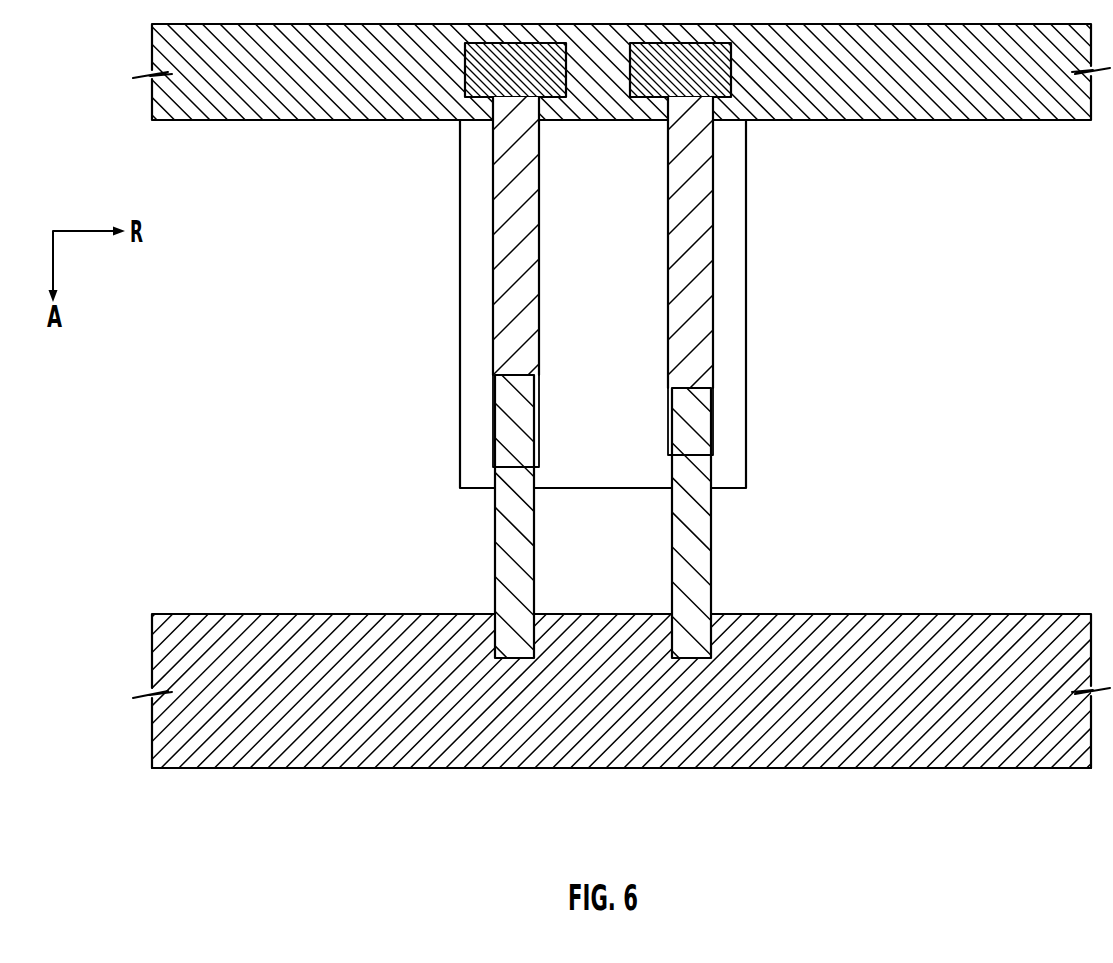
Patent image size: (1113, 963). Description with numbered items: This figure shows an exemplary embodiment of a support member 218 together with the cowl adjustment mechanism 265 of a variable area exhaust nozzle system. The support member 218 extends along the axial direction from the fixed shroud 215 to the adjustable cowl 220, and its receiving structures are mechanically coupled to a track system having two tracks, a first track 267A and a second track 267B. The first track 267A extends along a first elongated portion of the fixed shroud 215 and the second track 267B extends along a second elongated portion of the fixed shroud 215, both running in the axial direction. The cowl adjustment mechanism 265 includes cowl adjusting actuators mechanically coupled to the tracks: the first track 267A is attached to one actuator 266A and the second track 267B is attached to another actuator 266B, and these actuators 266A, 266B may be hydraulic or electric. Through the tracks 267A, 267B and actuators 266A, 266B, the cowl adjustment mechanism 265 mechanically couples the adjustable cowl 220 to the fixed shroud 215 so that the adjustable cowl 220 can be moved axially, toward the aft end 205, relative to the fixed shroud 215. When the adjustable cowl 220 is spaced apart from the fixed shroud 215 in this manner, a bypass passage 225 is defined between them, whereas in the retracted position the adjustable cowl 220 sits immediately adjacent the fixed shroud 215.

The fixed shroud 215 is at (615, 86).
The cowl adjusting actuator 266A is at (541, 83).
The cowl adjusting actuator 266B is at (705, 83).
The first track 267A is at (493, 302).
The second track 267B is at (713, 328).
The support member 218 is at (412, 195).
The bypass passage 225 is at (992, 379).
The adjustable cowl 220 is at (612, 714).
The aft end 205 is at (610, 780).
The cowl adjustment mechanism 265 is at (650, 535).